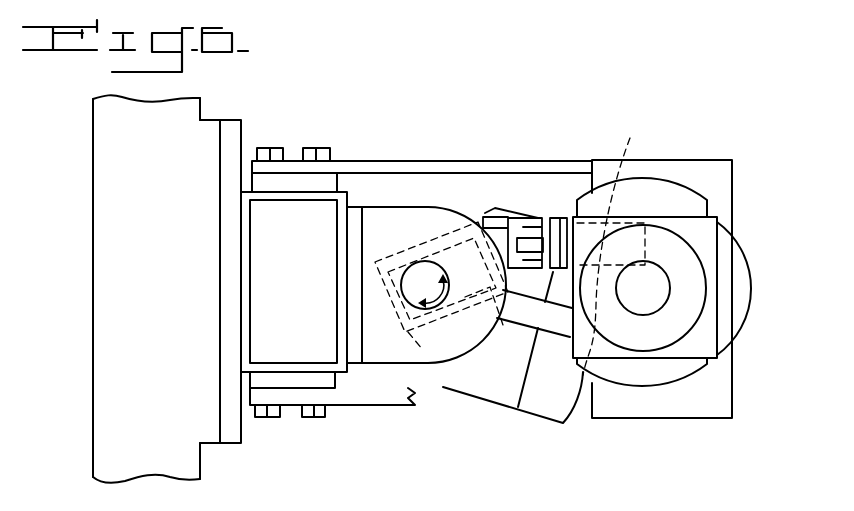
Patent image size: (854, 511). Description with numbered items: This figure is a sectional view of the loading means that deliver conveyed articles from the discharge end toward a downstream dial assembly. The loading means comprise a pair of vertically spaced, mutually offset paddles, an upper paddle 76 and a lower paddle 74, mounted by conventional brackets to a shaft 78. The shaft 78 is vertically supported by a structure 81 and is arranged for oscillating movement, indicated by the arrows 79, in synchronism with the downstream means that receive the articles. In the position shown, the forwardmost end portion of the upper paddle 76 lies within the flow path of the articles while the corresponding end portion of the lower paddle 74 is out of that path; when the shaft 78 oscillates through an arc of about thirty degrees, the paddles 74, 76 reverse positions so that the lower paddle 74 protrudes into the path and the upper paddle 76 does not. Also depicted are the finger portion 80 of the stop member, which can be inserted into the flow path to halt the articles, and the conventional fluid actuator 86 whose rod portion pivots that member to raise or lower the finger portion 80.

The lower paddle 74 is at (547, 407).
The upper paddle 76 is at (528, 287).
The shaft 78 is at (420, 268).
The arrows 79 is at (446, 300).
The finger portion 80 is at (662, 268).
The structure 81 is at (373, 400).
The fluid actuator 86 is at (558, 192).